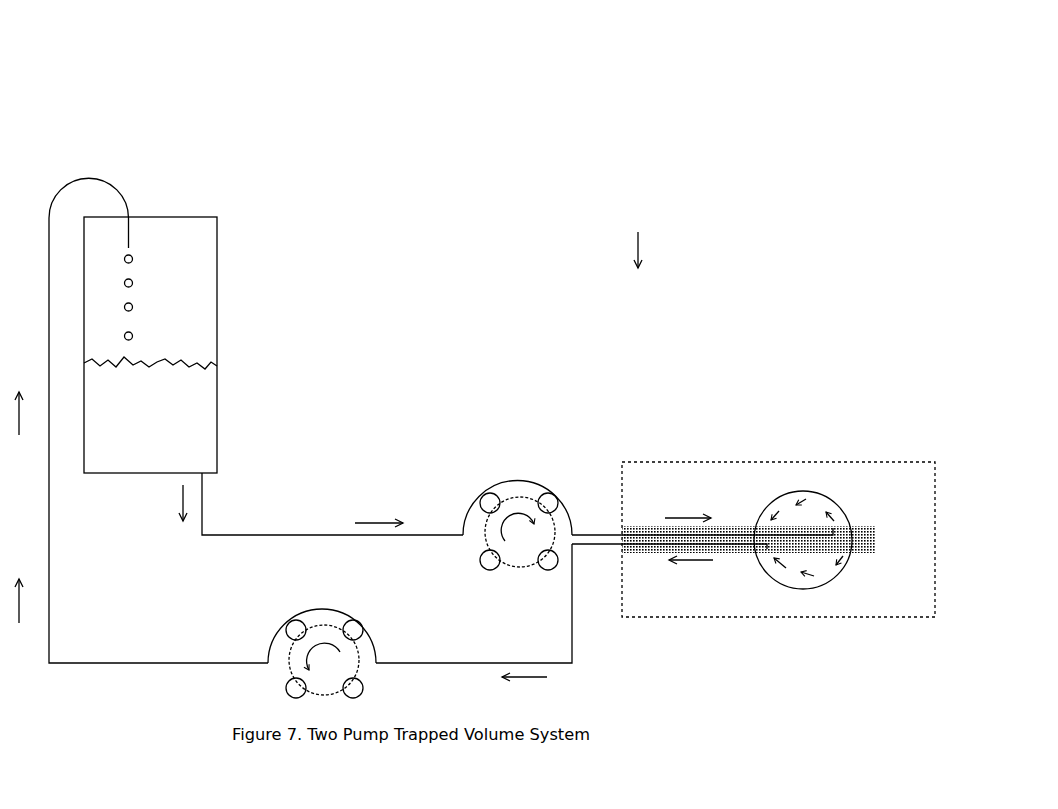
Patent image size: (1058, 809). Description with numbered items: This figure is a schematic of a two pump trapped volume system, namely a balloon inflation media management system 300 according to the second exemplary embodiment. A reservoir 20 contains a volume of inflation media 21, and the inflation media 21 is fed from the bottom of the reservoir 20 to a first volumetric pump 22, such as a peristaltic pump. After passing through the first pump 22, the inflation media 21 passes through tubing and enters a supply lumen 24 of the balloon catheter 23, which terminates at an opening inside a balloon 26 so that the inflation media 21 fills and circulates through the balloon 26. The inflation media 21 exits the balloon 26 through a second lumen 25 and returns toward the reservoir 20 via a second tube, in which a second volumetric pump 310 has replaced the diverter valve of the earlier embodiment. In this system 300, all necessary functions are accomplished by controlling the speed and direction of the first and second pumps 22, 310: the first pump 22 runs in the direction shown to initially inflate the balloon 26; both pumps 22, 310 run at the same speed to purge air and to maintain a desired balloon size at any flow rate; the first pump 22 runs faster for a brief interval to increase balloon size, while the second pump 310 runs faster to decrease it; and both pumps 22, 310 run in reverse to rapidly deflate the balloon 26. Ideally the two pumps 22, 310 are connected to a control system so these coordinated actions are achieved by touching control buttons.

The balloon inflation media management system 300 is at (495, 157).
The reservoir 20 is at (217, 332).
The inflation media 21 is at (170, 427).
The first volumetric pump 22 is at (496, 497).
The second volumetric pump 310 is at (336, 641).
The supply lumen 24 is at (599, 533).
The second lumen 25 is at (581, 545).
The balloon catheter 23 is at (778, 521).
The balloon 26 is at (845, 514).